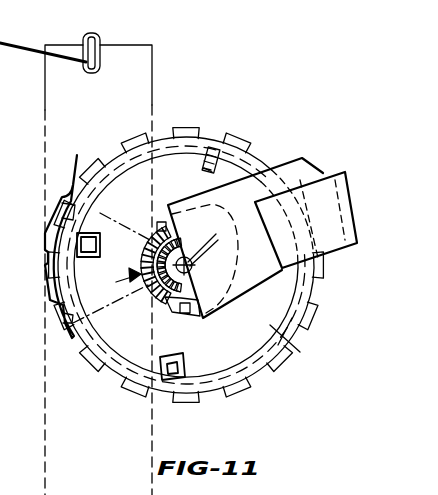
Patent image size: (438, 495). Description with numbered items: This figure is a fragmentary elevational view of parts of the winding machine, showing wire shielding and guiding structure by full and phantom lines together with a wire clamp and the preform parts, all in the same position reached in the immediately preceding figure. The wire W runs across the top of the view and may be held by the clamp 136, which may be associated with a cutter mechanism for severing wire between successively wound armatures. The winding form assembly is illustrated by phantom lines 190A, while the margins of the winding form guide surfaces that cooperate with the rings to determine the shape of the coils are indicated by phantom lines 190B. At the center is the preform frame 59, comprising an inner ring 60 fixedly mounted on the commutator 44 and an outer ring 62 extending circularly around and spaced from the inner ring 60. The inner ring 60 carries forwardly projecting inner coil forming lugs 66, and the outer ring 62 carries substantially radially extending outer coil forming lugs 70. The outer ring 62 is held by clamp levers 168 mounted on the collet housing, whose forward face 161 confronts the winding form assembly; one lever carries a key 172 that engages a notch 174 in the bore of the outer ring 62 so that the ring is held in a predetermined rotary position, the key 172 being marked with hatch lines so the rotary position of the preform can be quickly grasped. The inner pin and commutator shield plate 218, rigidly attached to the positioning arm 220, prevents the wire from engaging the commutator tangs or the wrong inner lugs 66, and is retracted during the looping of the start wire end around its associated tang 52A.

The wire W is at (30, 40).
The clamp 136 is at (97, 40).
The phantom lines 190A is at (157, 59).
The phantom lines 190B is at (72, 233).
The preform frame 59 is at (258, 381).
The outer coil forming lugs 70 is at (246, 138).
The outer ring 62 is at (262, 158).
The positioning arm 220 is at (330, 172).
The inner pin and commutator shield plate 218 is at (248, 288).
The key 172 is at (212, 147).
The notch 174 is at (205, 170).
The clamp levers 168 is at (172, 381).
The forward face 161 is at (300, 340).
The inner ring 60 is at (158, 222).
The commutator 44 is at (192, 265).
The inner coil forming lugs 66 is at (111, 268).
The tang 52A is at (181, 314).